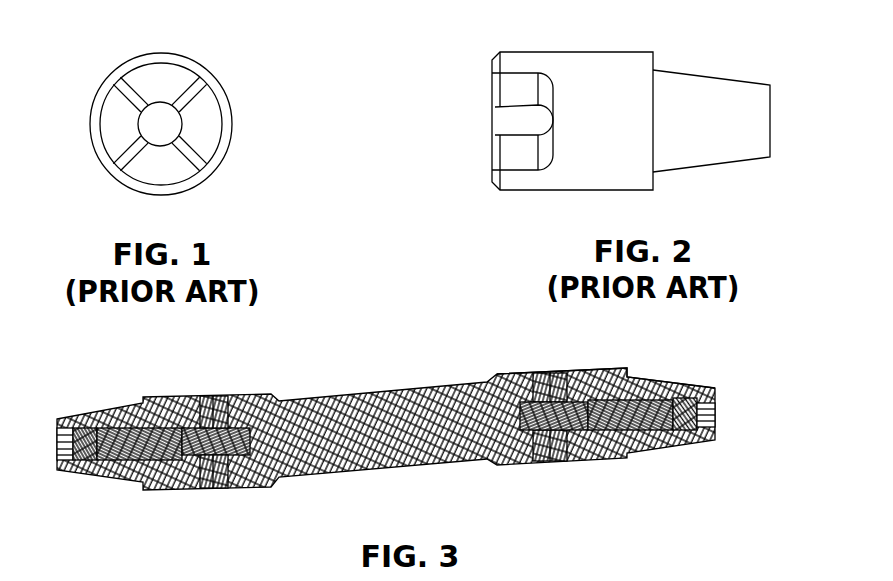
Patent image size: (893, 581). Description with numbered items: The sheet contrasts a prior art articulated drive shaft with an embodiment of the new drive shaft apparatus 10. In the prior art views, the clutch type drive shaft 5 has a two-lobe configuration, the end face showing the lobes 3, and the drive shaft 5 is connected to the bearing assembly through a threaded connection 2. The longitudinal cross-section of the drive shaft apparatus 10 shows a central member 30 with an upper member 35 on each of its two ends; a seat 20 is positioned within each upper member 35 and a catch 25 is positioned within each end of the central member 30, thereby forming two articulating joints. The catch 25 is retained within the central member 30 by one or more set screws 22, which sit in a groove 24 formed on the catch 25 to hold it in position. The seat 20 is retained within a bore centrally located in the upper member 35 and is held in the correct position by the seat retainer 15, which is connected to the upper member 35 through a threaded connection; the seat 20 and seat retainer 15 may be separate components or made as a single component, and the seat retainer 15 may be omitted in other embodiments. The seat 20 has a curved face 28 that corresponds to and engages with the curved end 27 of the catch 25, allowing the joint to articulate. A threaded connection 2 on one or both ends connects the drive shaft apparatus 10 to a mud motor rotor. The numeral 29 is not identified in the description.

In FIG. 1, the drive shaft 5 is at (178, 123).
In FIG. 2, the drive shaft 5 is at (605, 40).
In FIG. 1, the lobes 3 is at (167, 172).
In FIG. 2, the threaded connection 2 is at (732, 78).
In FIG. 3, the threaded connection 2 is at (667, 380).
In FIG. 3, the drive shaft apparatus 10 is at (398, 428).
In FIG. 3, the central member 30 is at (395, 450).
In FIG. 3, the left bearing 29 is at (83, 460).
In FIG. 3, the curved end 27 is at (182, 452).
In FIG. 3, the upper member 35 is at (183, 480).
In FIG. 3, the groove 24 is at (540, 402).
In FIG. 3, the set screw 22 is at (545, 461).
In FIG. 3, the catch 25 is at (573, 413).
In FIG. 3, the curved face 28 is at (597, 412).
In FIG. 3, the seat 20 is at (643, 413).
In FIG. 3, the seat retainer 15 is at (693, 403).